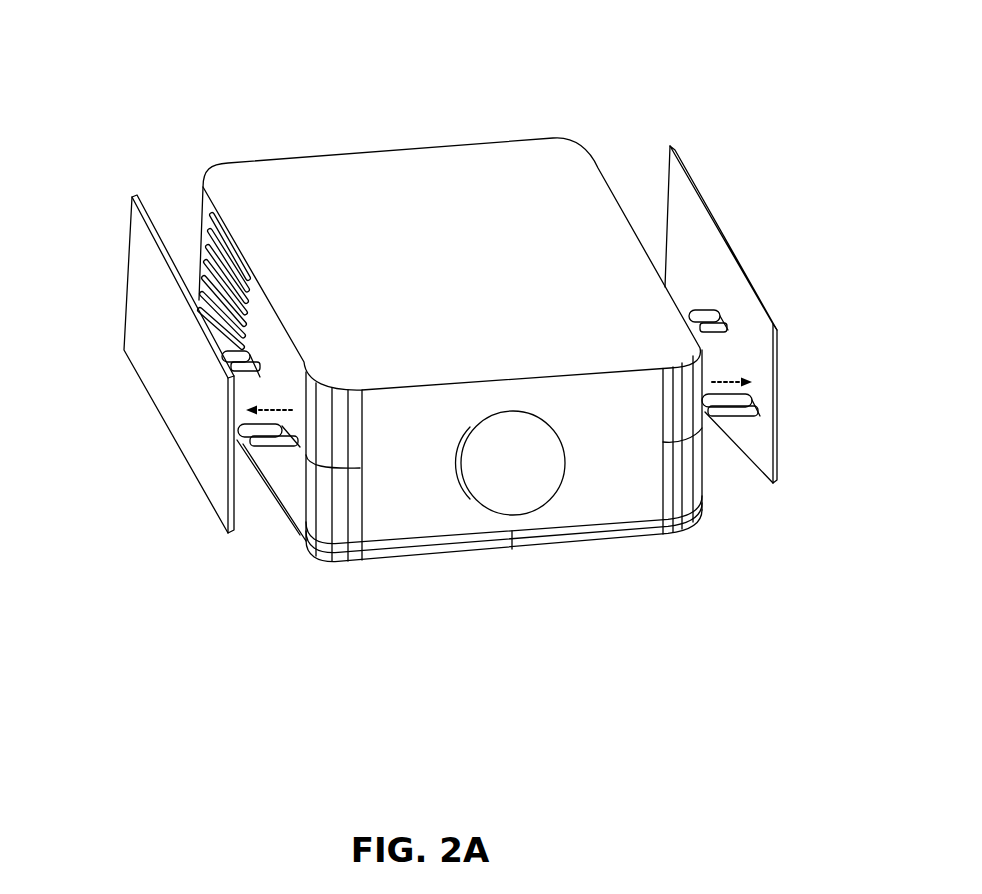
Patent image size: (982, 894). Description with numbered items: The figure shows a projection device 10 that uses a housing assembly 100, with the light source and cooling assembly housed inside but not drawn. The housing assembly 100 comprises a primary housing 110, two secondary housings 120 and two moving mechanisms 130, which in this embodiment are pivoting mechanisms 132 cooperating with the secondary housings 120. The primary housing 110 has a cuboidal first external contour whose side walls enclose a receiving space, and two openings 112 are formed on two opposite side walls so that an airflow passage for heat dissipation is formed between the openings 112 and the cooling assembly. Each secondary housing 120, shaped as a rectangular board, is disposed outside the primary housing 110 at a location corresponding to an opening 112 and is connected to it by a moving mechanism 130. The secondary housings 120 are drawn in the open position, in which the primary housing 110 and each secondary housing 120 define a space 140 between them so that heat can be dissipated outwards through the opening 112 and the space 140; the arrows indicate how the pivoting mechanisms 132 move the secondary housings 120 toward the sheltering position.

The projection device 10 is at (469, 323).
The housing assembly 100 is at (409, 298).
The primary housing 110 is at (421, 317).
The openings 112 is at (207, 245).
The secondary housings 120 is at (144, 349).
The moving mechanism 130 is at (560, 356).
The pivoting mechanism 132 is at (704, 313).
The space 140 is at (261, 514).